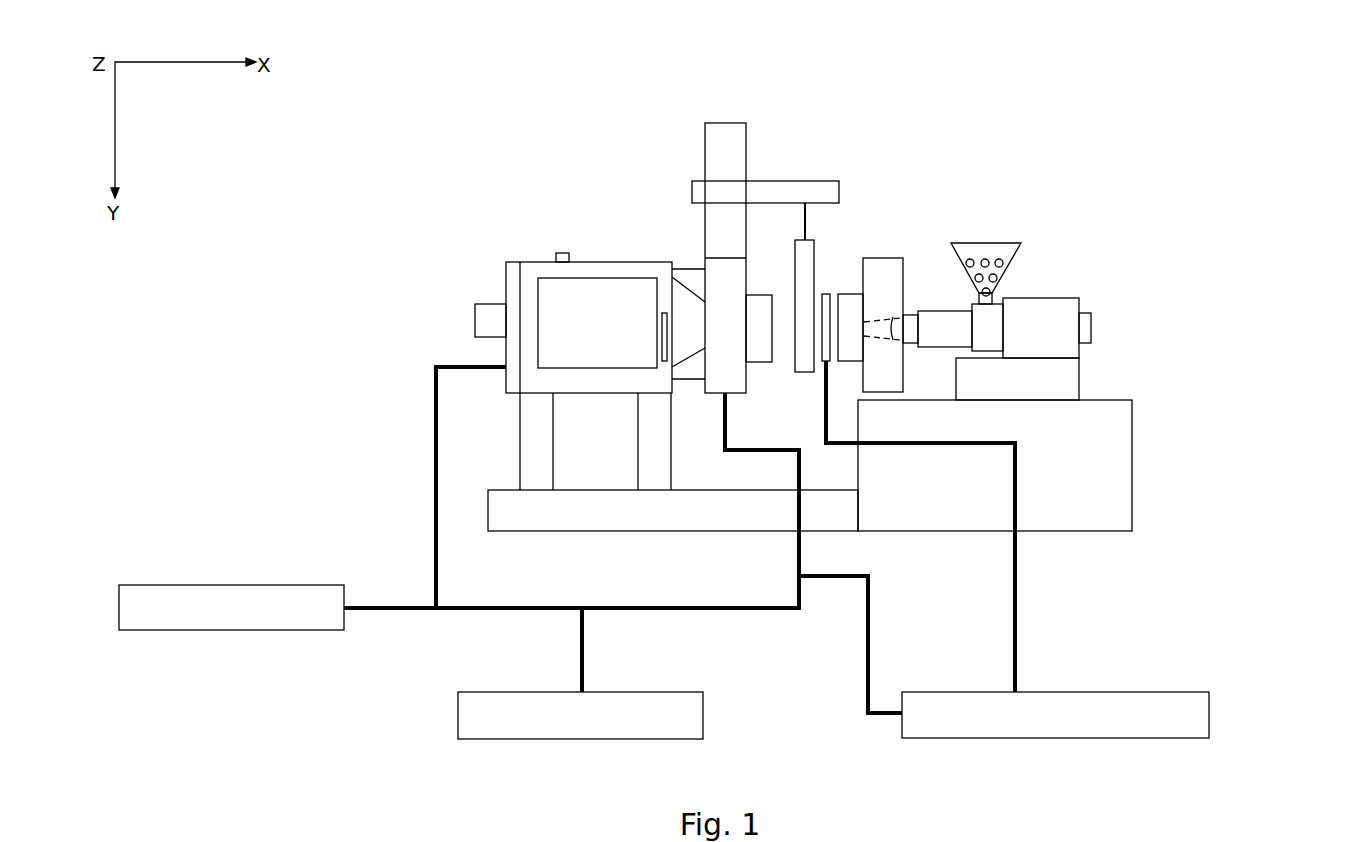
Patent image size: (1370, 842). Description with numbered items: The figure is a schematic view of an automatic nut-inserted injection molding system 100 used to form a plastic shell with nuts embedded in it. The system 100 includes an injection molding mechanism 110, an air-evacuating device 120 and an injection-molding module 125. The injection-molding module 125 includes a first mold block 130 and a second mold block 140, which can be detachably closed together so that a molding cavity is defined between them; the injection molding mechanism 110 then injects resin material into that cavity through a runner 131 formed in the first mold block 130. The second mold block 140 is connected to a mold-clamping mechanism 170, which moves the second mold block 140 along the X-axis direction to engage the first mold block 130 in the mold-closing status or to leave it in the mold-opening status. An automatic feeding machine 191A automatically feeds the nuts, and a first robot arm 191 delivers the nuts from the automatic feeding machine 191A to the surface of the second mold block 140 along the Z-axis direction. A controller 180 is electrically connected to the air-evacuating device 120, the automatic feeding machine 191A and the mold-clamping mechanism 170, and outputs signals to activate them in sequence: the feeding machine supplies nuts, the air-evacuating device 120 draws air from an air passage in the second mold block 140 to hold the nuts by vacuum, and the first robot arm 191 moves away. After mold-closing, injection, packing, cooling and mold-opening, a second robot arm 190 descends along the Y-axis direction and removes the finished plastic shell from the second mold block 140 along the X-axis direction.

The automatic nut-inserted injection molding system 100 is at (1175, 116).
The injection molding mechanism 110 is at (1048, 308).
The air-evacuating device 120 is at (703, 714).
The injection-molding module 125 is at (963, 113).
The first mold block 130 is at (885, 263).
The runner 131 is at (893, 317).
The second mold block 140 is at (737, 269).
The mold-clamping mechanism 170 is at (538, 286).
The controller 180 is at (230, 585).
The second robot arm 190 is at (780, 187).
The first robot arm 191 is at (827, 294).
The automatic feeding machine 191A is at (1209, 713).